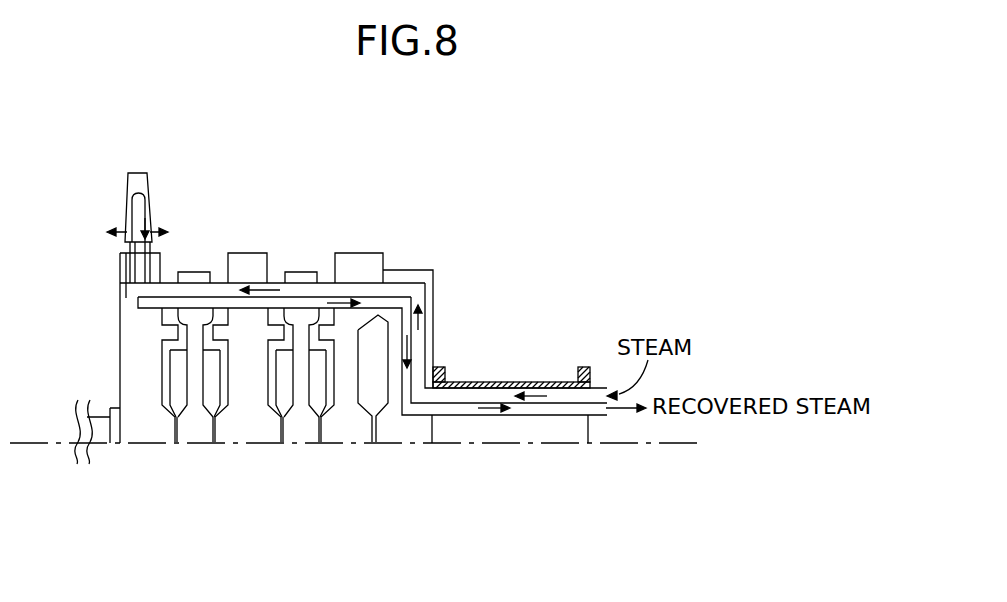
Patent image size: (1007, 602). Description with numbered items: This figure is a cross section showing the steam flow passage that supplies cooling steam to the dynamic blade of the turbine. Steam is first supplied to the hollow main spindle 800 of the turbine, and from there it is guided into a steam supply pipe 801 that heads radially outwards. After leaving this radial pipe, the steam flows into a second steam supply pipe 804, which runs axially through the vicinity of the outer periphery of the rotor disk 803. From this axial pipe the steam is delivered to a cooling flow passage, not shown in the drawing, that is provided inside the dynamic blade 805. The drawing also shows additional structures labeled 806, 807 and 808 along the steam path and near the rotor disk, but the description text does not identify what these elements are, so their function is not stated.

The hollow main spindle 800 is at (548, 383).
The steam supply pipe 801 is at (420, 345).
The rotor disk 803 is at (250, 370).
The steam supply pipe 804 is at (320, 293).
The dynamic blade 805 is at (135, 188).
The steam recovery passage 806 is at (412, 387).
The connecting block 807 is at (182, 273).
The nozzle 808 is at (210, 308).